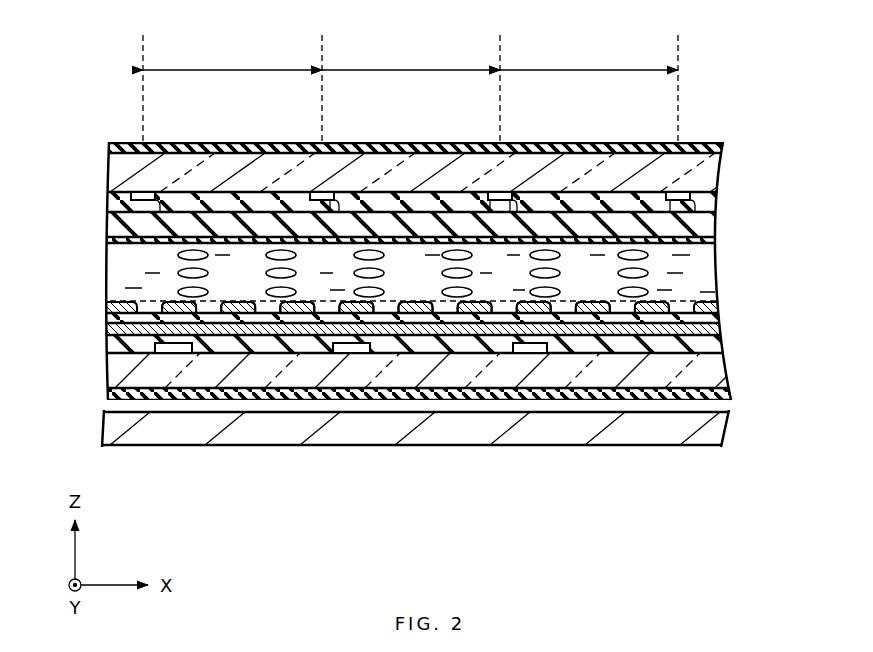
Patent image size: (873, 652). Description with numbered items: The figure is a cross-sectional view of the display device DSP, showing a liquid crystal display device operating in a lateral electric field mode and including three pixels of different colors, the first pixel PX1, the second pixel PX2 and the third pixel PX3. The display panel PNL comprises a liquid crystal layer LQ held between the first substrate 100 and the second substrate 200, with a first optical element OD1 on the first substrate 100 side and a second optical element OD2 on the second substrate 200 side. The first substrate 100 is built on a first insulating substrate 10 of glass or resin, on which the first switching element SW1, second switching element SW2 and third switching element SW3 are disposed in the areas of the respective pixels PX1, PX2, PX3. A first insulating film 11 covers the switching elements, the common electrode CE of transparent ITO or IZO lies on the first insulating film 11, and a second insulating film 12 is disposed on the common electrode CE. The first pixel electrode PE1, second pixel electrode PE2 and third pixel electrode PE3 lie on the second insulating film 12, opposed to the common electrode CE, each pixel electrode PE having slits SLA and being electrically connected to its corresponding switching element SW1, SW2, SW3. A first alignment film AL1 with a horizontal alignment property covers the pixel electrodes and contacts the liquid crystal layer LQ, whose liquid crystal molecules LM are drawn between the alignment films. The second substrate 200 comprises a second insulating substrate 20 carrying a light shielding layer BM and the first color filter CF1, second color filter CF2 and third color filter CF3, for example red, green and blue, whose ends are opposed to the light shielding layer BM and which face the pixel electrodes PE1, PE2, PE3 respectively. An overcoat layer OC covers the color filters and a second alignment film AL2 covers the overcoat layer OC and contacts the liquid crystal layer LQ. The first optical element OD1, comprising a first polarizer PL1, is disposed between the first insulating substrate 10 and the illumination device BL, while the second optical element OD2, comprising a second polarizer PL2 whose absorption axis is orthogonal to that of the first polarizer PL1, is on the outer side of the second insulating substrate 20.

The display device DSP is at (727, 80).
The display panel PNL is at (730, 143).
The first substrate 100 is at (738, 350).
The second substrate 200 is at (718, 202).
The first pixel PX1 is at (232, 89).
The second pixel PX2 is at (411, 89).
The third pixel PX3 is at (589, 89).
The light shielding layer BM is at (672, 195).
The first color filter CF1 is at (237, 206).
The second color filter CF2 is at (415, 206).
The third color filter CF3 is at (595, 206).
The second optical element OD2 is at (110, 148).
The second polarizer PL2 is at (382, 148).
The second insulating substrate 20 is at (118, 184).
The overcoat layer OC is at (700, 226).
The second alignment film AL2 is at (108, 240).
The liquid crystal molecules LM is at (178, 254).
The liquid crystal layer LQ is at (700, 272).
The slits SLA is at (623, 302).
The first alignment film AL1 is at (150, 301).
The pixel electrode PE is at (732, 309).
The first pixel electrode PE1 is at (298, 314).
The second pixel electrode PE2 is at (475, 314).
The third pixel electrode PE3 is at (652, 314).
The second insulating film 12 is at (108, 318).
The common electrode CE is at (107, 330).
The first insulating film 11 is at (118, 343).
The first switching element SW1 is at (174, 354).
The second switching element SW2 is at (352, 354).
The third switching element SW3 is at (531, 354).
The first insulating substrate 10 is at (118, 372).
The first optical element OD1 is at (108, 394).
The first polarizer PL1 is at (382, 412).
The illumination device BL is at (115, 430).